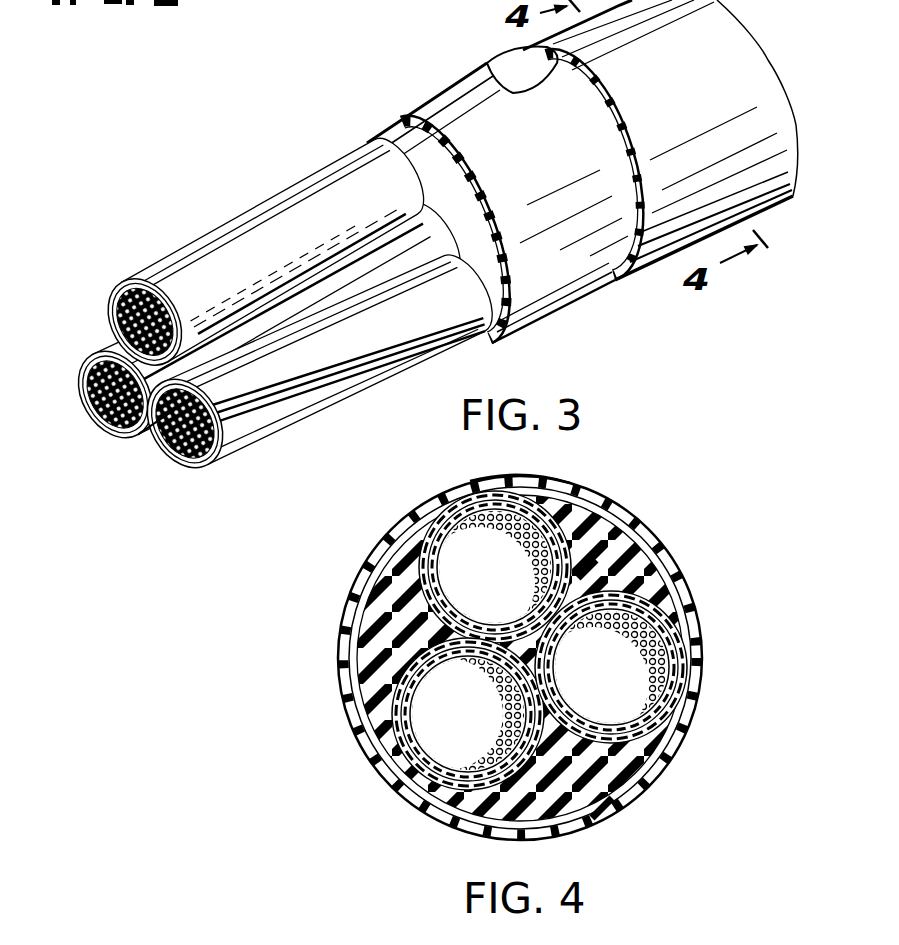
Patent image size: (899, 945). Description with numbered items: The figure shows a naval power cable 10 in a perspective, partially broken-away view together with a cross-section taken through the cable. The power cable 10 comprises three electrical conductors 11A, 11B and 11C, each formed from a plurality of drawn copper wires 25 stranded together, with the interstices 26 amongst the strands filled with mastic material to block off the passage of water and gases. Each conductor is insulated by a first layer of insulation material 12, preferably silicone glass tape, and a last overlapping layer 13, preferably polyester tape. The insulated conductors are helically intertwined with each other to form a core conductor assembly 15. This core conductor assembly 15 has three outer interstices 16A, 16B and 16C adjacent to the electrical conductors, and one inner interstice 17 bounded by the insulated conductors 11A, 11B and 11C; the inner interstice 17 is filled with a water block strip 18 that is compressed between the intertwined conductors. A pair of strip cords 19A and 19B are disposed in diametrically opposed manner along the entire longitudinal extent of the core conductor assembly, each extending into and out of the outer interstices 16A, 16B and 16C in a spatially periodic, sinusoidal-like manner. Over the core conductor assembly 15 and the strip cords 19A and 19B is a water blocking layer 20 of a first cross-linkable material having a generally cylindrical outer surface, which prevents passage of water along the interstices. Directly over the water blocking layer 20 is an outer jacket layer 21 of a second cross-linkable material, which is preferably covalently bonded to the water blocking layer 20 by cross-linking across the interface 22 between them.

In FIG. 3, the power cable 10 is at (595, 184).
In FIG. 4, the power cable 10 is at (508, 647).
In FIG. 3, the electrical conductor 11A is at (397, 347).
In FIG. 4, the electrical conductor 11A is at (403, 714).
In FIG. 3, the electrical conductor 11B is at (204, 247).
In FIG. 4, the electrical conductor 11B is at (584, 567).
In FIG. 3, the electrical conductor 11C is at (287, 413).
In FIG. 4, the electrical conductor 11C is at (647, 656).
In FIG. 3, the first layer of insulation material 12 is at (117, 307).
In FIG. 4, the first layer of insulation material 12 is at (667, 633).
In FIG. 3, the second layer of insulation material 13 is at (117, 285).
In FIG. 4, the second layer of insulation material 13 is at (700, 597).
In FIG. 3, the core conductor assembly 15 is at (263, 340).
In FIG. 4, the outer interstice 16A is at (600, 810).
In FIG. 4, the outer interstice 16B is at (600, 563).
In FIG. 4, the outer interstice 16C is at (437, 630).
In FIG. 4, the inner interstice 17 is at (463, 684).
In FIG. 4, the water block strip 18 is at (540, 657).
In FIG. 3, the strip cord 19A is at (157, 448).
In FIG. 4, the strip cord 19A is at (457, 714).
In FIG. 3, the strip cord 19B is at (262, 312).
In FIG. 4, the strip cord 19B is at (653, 560).
In FIG. 3, the water blocking layer 20 is at (409, 125).
In FIG. 4, the water blocking layer 20 is at (377, 598).
In FIG. 3, the outer jacket layer 21 is at (766, 190).
In FIG. 4, the outer jacket layer 21 is at (357, 723).
In FIG. 3, the interface 22 is at (490, 76).
In FIG. 4, the interface 22 is at (404, 522).
In FIG. 3, the drawn copper wires 25 is at (97, 348).
In FIG. 4, the drawn copper wires 25 is at (553, 472).
In FIG. 4, the interstices amongst strands 26 is at (470, 493).